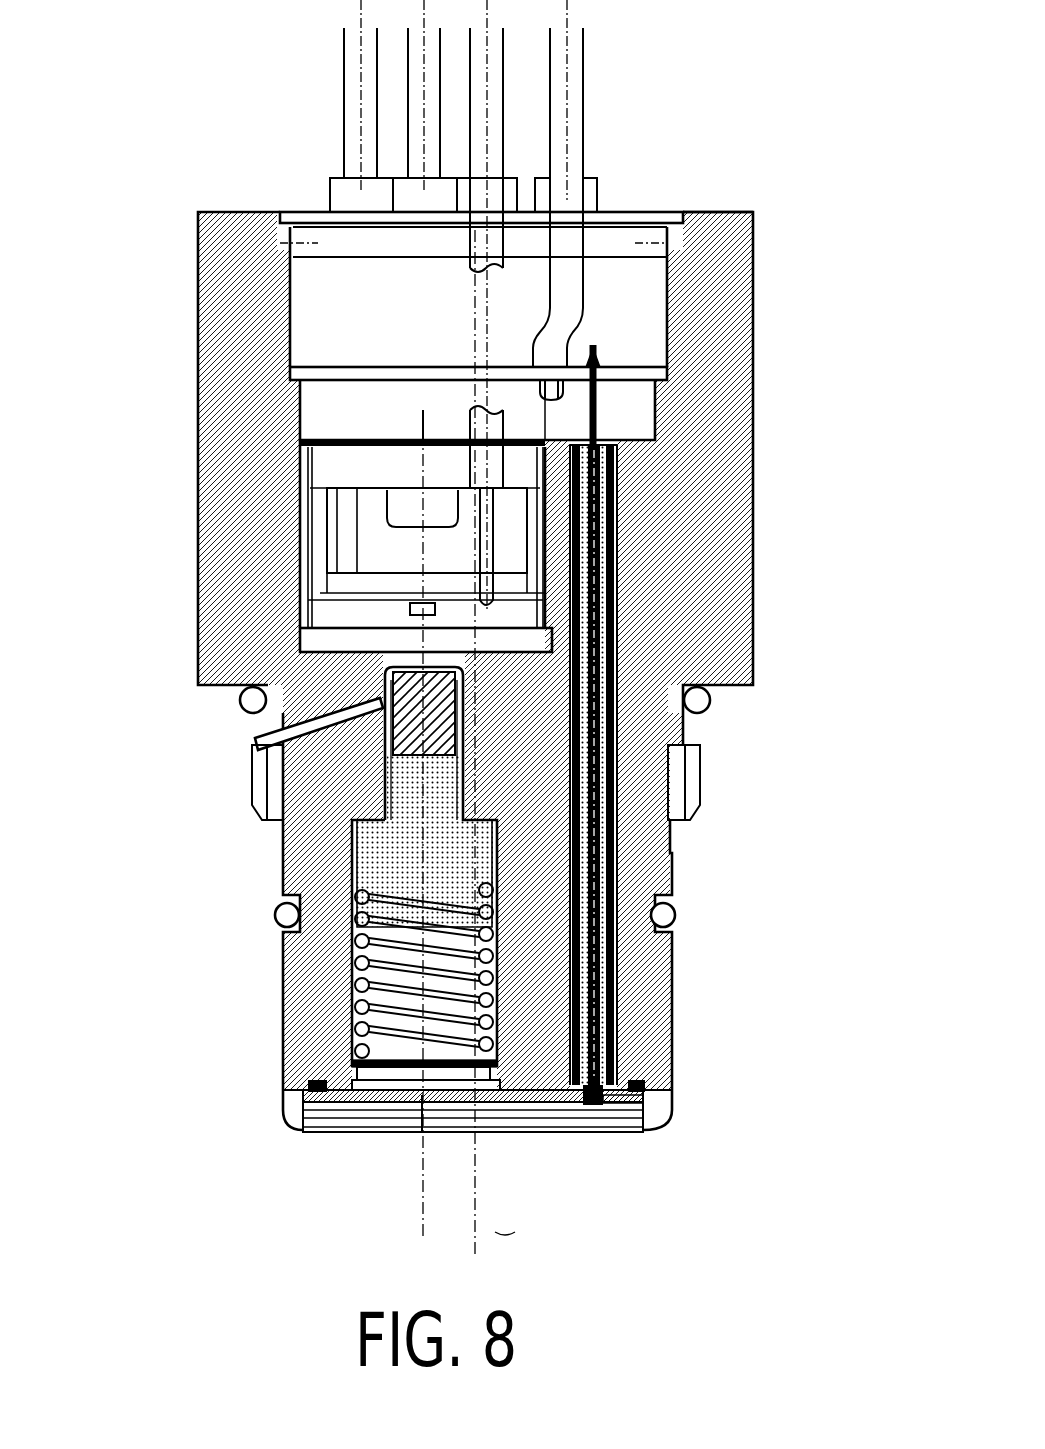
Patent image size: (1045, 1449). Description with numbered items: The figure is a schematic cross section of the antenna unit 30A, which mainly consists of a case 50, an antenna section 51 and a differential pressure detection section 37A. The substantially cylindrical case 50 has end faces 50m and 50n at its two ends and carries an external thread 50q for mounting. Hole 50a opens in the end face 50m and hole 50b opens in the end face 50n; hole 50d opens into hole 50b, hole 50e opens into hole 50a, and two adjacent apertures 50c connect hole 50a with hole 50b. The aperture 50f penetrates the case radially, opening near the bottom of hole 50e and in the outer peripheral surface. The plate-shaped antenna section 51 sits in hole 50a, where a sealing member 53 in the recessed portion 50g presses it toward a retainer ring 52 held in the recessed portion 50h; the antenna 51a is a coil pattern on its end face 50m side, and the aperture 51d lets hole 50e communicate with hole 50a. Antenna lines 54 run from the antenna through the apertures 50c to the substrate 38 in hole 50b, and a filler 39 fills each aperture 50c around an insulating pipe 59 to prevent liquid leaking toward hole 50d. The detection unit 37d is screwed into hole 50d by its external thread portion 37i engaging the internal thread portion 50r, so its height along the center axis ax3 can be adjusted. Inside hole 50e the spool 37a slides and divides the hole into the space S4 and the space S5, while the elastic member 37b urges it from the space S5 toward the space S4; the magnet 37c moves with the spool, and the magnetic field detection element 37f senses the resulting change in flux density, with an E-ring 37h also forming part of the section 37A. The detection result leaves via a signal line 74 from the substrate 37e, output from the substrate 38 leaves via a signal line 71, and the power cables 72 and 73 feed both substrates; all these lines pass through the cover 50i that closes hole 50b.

The power cable 73 is at (355, 55).
The power cable 72 is at (410, 43).
The signal line 74 is at (503, 45).
The signal line 71 is at (580, 50).
The antenna unit 30A is at (800, 25).
The cover 50i is at (310, 220).
The end face 50n is at (720, 212).
The substrate 38 is at (330, 375).
The hole 50b is at (650, 310).
The case 50 is at (740, 323).
The hole 50d is at (335, 460).
The antenna line 54 is at (600, 405).
The internal thread portion 50r is at (617, 455).
The external thread portion 37i is at (300, 505).
The detection unit 37d is at (375, 555).
The substrate 37e is at (345, 597).
The magnetic field detection element 37f is at (320, 632).
The differential pressure detection section 37A is at (118, 502).
The space S4 is at (242, 700).
The magnet 37c is at (267, 738).
The spool 37a is at (400, 775).
The elastic member 37b is at (353, 892).
The E-ring 37h is at (350, 1050).
The space S5 is at (350, 965).
The recessed portion 50g is at (310, 1090).
The recessed portion 50h is at (307, 1107).
The hole 50a is at (323, 1132).
The antenna 51a is at (393, 1107).
The aperture 51d is at (460, 1107).
The antenna section 51 is at (563, 1107).
The center axis ax3 is at (528, 743).
The end face 50m is at (655, 1128).
The retainer ring 52 is at (650, 1107).
The sealing member 53 is at (647, 1080).
The insulating pipe 59 is at (618, 952).
The filler 39 is at (617, 890).
The external thread 50q is at (688, 793).
The hole 50e is at (667, 745).
The aperture 50f is at (700, 683).
The aperture 50c is at (617, 563).